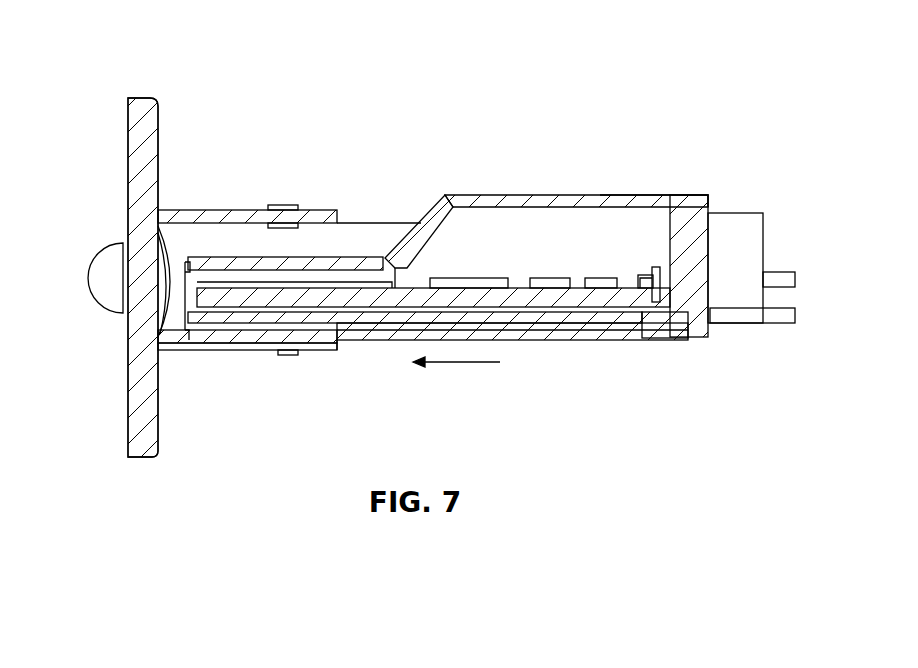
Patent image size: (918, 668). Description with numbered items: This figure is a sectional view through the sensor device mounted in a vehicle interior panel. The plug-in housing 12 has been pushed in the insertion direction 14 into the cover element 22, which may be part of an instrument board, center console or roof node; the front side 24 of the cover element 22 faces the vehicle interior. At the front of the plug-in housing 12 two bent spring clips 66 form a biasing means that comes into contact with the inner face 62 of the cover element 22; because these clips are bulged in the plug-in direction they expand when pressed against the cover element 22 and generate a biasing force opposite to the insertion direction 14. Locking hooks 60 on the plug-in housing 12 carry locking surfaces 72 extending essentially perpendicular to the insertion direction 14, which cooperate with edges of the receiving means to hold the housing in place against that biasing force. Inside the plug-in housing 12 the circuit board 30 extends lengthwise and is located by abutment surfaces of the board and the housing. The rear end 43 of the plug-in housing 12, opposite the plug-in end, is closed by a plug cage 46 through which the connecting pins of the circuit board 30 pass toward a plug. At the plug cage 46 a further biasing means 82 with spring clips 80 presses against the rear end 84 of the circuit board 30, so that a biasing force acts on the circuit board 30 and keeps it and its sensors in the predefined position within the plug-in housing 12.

The plug-in housing 12 is at (552, 196).
The insertion direction 14 is at (455, 362).
The cover element 22 is at (142, 443).
The front side 24 is at (132, 385).
The circuit board 30 is at (582, 297).
The rear end 43 is at (682, 166).
The plug cage 46 is at (700, 245).
The locking hooks 60 is at (275, 206).
The inner face 62 is at (172, 240).
The spring clips 66 is at (158, 233).
The locking surfaces 72 is at (300, 208).
The spring clips 80 is at (660, 258).
The biasing means 82 is at (715, 337).
The rear end 84 is at (652, 320).